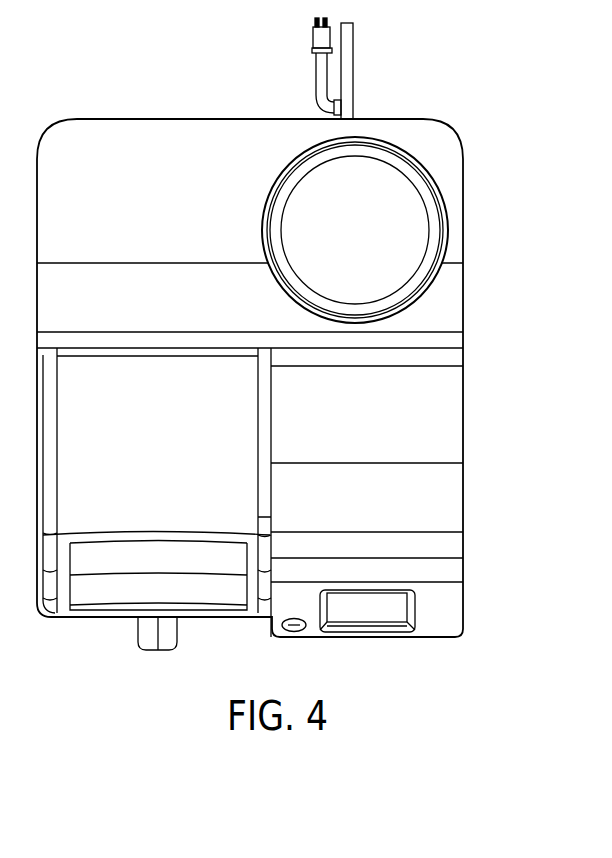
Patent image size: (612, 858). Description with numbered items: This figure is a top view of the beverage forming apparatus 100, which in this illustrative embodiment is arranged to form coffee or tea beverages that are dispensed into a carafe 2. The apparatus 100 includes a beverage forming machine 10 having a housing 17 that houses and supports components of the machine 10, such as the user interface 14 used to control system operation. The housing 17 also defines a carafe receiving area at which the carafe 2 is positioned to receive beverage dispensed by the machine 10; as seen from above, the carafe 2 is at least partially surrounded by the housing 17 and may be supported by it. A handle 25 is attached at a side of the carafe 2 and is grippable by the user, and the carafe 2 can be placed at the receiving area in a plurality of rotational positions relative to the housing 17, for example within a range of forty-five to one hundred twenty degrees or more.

The beverage forming apparatus 100 is at (94, 62).
The beverage forming machine 10 is at (488, 151).
The housing 17 is at (452, 430).
The user interface 14 is at (363, 608).
The carafe 2 is at (114, 660).
The handle 25 is at (150, 636).